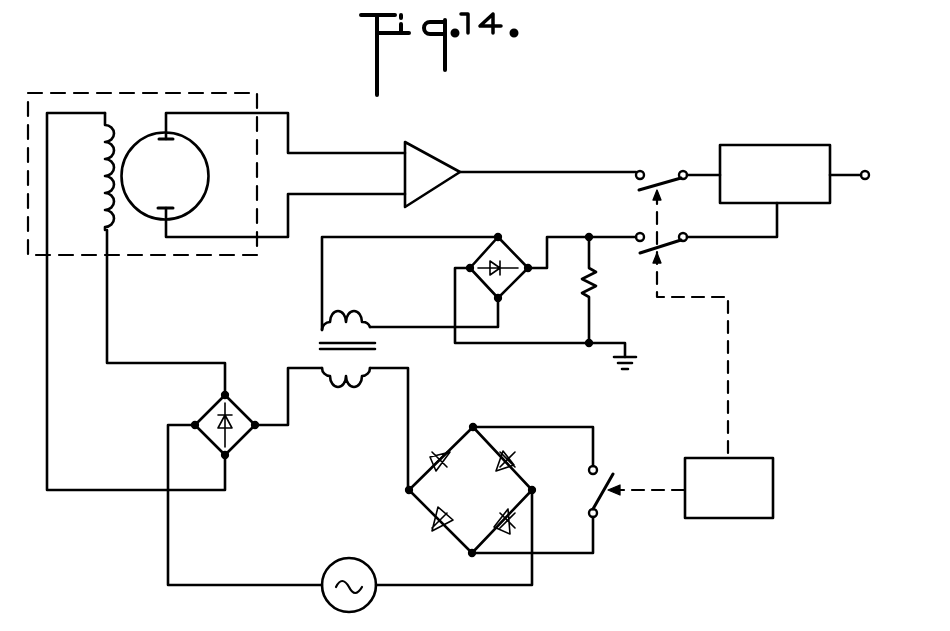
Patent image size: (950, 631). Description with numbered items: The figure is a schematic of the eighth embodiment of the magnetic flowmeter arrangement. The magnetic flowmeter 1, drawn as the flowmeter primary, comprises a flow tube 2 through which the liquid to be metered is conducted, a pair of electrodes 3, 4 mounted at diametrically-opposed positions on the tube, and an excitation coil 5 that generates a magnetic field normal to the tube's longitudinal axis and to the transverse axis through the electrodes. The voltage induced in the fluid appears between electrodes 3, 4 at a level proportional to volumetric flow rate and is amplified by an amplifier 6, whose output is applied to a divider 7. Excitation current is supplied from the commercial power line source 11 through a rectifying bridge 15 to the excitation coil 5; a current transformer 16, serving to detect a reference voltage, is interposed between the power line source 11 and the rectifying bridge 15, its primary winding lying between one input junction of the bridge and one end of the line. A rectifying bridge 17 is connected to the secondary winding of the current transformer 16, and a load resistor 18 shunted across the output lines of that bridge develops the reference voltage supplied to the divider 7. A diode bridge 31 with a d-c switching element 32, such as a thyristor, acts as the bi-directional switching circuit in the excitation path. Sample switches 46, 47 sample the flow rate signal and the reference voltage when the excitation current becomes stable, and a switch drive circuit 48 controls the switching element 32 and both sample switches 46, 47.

The magnetic flowmeter 1 is at (220, 93).
The flow tube 2 is at (150, 136).
The electrode 3 is at (170, 141).
The electrode 4 is at (168, 207).
The excitation coil 5 is at (97, 199).
The amplifier 6 is at (432, 162).
The divider 7 is at (784, 145).
The commercial power line source 11 is at (348, 558).
The rectifying bridge 15 is at (240, 441).
The current transformer 16 is at (379, 348).
The rectifying bridge 17 is at (514, 286).
The load resistor 18 is at (597, 283).
The diode bridge 31 is at (462, 426).
The d-c switching element 32 is at (606, 500).
The sample switch 46 is at (664, 172).
The sample switch 47 is at (668, 250).
The switch drive circuit 48 is at (773, 463).